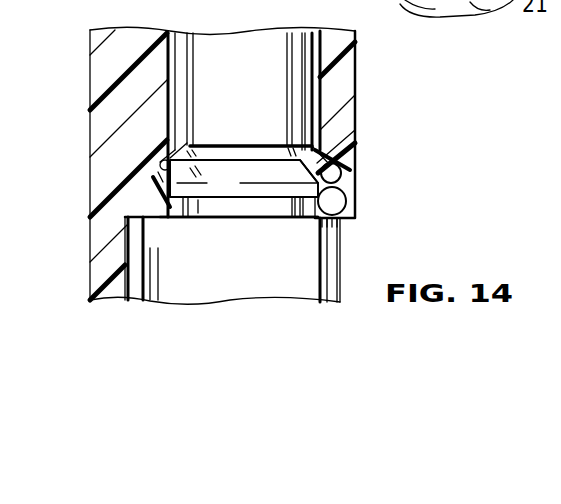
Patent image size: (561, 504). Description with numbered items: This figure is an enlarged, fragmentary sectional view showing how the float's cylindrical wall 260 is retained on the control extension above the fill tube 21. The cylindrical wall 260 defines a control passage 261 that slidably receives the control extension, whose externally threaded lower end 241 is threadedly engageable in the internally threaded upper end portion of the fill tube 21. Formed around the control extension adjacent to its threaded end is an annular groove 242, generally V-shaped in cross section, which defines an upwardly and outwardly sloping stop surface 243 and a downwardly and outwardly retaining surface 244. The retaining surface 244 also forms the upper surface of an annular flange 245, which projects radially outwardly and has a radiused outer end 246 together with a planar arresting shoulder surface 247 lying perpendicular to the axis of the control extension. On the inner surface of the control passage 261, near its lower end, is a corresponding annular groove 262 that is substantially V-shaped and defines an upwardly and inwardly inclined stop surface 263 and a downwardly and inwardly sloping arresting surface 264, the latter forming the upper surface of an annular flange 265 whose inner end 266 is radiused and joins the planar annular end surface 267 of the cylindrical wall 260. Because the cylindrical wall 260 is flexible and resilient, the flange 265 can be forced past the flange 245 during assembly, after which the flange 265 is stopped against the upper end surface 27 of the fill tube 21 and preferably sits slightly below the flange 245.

The fill tube 21 is at (203, 300).
The upper end surface 27 is at (239, 249).
The externally threaded lower end 241 is at (245, 218).
The annular groove 242 is at (320, 157).
The stop surface 243 is at (160, 162).
The retaining surface 244 is at (340, 168).
The annular flange 245 is at (275, 183).
The outer end 246 is at (346, 197).
The arresting shoulder surface 247 is at (227, 200).
The cylindrical wall 260 is at (347, 93).
The control passage 261 is at (172, 68).
The annular groove 262 is at (195, 133).
The stop surface 263 is at (160, 170).
The arresting surface 264 is at (160, 183).
The annular flange 265 is at (198, 213).
The inner end 266 is at (337, 223).
The annular end surface 267 is at (127, 230).